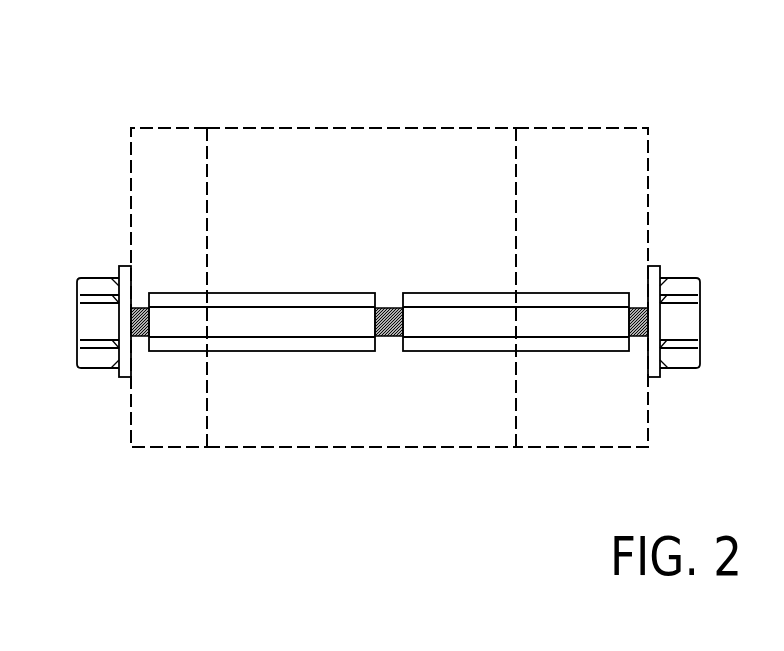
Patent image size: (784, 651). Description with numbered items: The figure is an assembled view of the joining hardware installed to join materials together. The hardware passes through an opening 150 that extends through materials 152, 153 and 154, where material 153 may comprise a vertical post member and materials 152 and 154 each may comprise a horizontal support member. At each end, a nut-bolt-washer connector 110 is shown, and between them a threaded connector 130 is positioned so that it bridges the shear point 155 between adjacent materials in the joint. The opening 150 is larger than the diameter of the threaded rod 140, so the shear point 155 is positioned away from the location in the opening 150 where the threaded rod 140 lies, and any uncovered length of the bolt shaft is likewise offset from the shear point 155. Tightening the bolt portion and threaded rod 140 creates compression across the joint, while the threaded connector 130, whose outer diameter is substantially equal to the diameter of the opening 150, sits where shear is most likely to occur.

The nut-bolt-washer connector 110 is at (689, 258).
The threaded connector 130 is at (260, 397).
The threaded rod 140 is at (389, 297).
The opening 150 is at (428, 353).
The material 152 is at (162, 200).
The material 153 is at (373, 168).
The material 154 is at (559, 205).
The shear point 155 is at (208, 207).